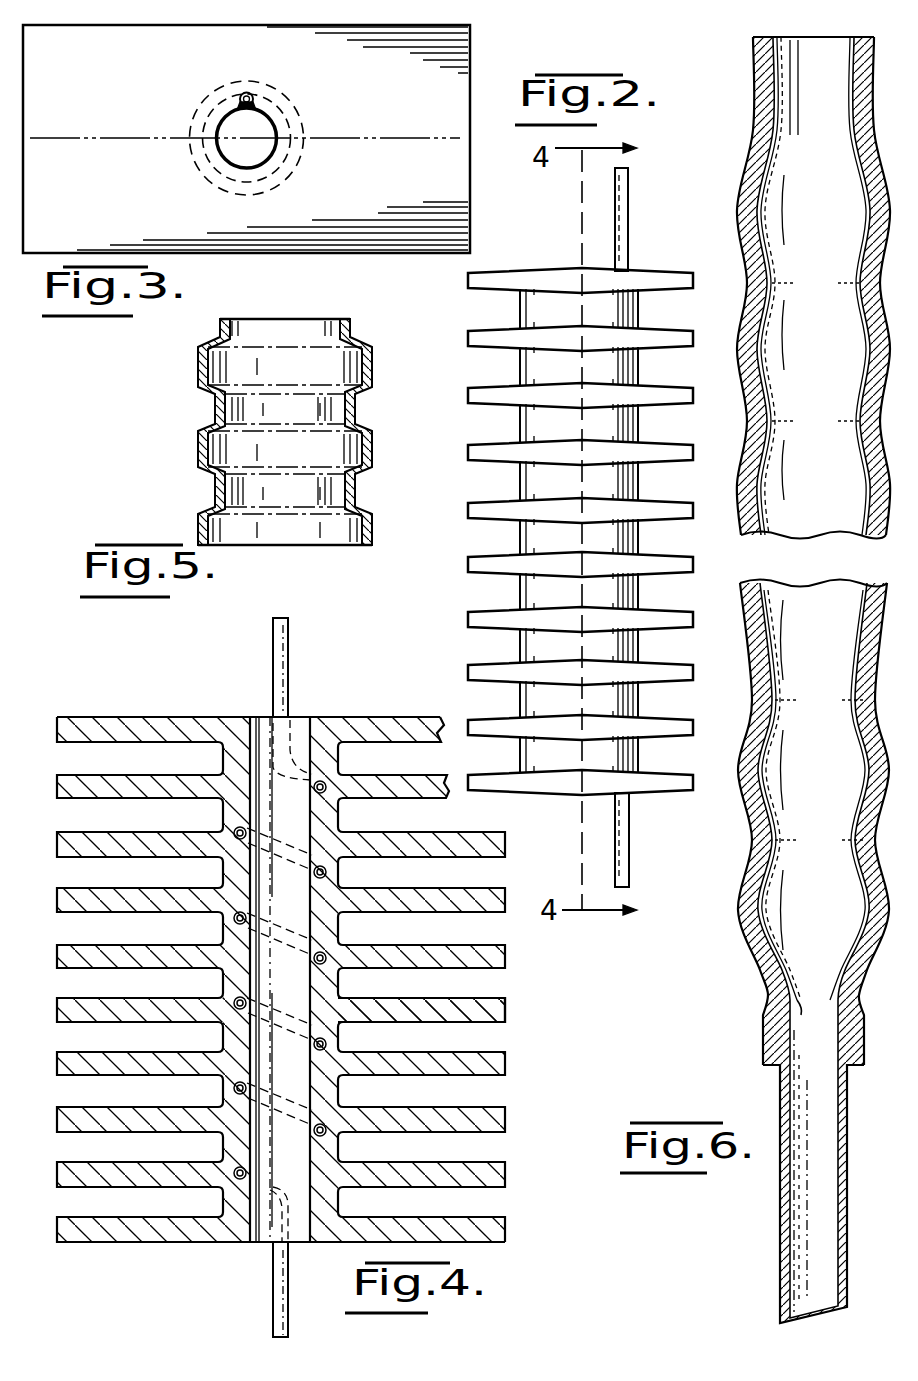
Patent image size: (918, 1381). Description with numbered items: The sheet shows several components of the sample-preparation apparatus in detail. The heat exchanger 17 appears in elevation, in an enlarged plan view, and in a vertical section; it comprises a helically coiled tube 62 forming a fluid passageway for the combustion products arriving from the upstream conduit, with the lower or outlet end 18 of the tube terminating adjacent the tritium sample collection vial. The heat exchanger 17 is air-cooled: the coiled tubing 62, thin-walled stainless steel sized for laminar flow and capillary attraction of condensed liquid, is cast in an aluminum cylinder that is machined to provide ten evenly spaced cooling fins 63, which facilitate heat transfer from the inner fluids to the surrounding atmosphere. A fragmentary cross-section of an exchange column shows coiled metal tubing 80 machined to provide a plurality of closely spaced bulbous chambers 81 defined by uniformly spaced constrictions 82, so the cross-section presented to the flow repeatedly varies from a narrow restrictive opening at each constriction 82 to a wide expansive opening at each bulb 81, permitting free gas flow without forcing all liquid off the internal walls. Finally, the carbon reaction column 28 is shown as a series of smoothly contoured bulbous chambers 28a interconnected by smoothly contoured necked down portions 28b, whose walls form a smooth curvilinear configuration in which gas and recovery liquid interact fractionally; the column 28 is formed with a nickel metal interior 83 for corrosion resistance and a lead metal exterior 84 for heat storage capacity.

In FIG. 3, the heat exchanger 17 is at (246, 167).
In FIG. 2, the heat exchanger 17 is at (548, 527).
In FIG. 4, the heat exchanger 17 is at (324, 977).
In FIG. 3, the cooling fins 63 is at (390, 254).
In FIG. 2, the cooling fins 63 is at (478, 568).
In FIG. 4, the cooling fins 63 is at (507, 1014).
In FIG. 3, the helically coiled tube 62 is at (252, 94).
In FIG. 4, the helically coiled tube 62 is at (313, 717).
In FIG. 2, the lower or outlet end 18 is at (629, 833).
In FIG. 4, the lower or outlet end 18 is at (273, 1292).
In FIG. 5, the coiled metal tubing 80 is at (247, 432).
In FIG. 5, the bulbous chambers 81 is at (215, 455).
In FIG. 5, the constrictions 82 is at (215, 494).
In FIG. 6, the carbon reaction column 28 is at (722, 206).
In FIG. 6, the bulbous chambers 28a is at (740, 927).
In FIG. 6, the necked down portions 28b is at (752, 835).
In FIG. 6, the nickel metal interior 83 is at (760, 960).
In FIG. 6, the lead metal exterior 84 is at (766, 992).